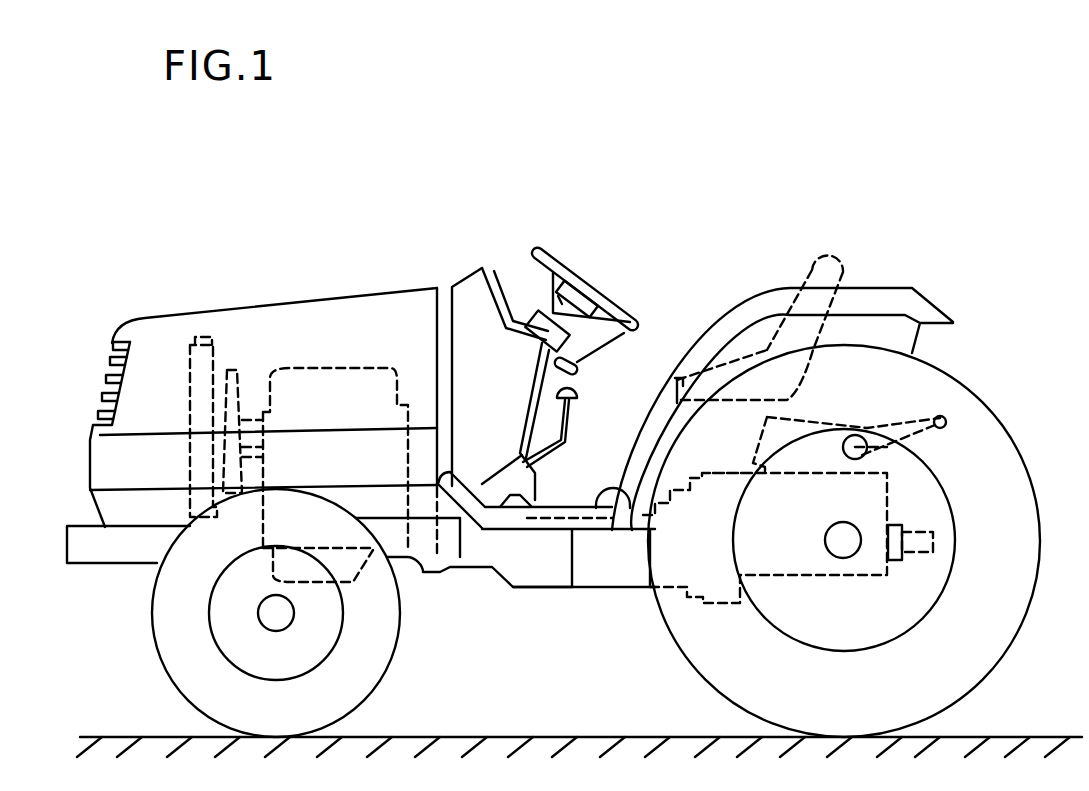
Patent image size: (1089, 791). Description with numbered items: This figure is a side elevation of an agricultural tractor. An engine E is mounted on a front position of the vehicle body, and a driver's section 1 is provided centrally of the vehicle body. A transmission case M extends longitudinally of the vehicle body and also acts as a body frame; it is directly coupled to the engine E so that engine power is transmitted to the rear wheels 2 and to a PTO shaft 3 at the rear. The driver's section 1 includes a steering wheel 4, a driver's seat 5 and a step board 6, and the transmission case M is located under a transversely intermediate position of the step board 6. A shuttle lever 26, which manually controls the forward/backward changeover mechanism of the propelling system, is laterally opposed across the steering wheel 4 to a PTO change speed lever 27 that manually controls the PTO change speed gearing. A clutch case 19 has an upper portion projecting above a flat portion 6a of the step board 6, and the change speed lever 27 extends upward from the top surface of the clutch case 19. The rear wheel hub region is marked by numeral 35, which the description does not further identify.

The driver's section 1 is at (718, 255).
The rear wheels 2 is at (992, 667).
The PTO shaft 3 is at (937, 530).
The steering wheel 4 is at (550, 249).
The driver's seat 5 is at (817, 273).
The step board 6 is at (632, 530).
The flat portion 6a is at (576, 489).
The clutch case 19 is at (472, 557).
The shuttle lever 26 is at (626, 325).
The PTO change speed lever 27 is at (579, 392).
The rear axle 35 is at (847, 543).
The engine E is at (383, 367).
The transmission case M is at (728, 595).